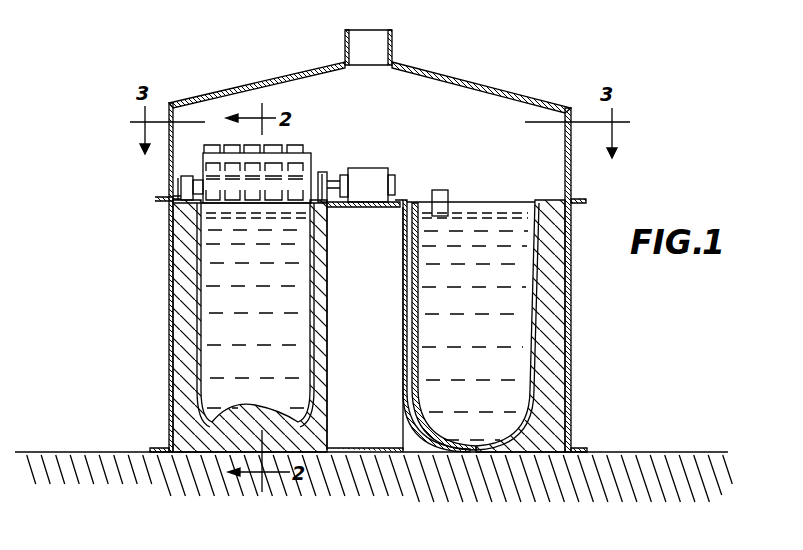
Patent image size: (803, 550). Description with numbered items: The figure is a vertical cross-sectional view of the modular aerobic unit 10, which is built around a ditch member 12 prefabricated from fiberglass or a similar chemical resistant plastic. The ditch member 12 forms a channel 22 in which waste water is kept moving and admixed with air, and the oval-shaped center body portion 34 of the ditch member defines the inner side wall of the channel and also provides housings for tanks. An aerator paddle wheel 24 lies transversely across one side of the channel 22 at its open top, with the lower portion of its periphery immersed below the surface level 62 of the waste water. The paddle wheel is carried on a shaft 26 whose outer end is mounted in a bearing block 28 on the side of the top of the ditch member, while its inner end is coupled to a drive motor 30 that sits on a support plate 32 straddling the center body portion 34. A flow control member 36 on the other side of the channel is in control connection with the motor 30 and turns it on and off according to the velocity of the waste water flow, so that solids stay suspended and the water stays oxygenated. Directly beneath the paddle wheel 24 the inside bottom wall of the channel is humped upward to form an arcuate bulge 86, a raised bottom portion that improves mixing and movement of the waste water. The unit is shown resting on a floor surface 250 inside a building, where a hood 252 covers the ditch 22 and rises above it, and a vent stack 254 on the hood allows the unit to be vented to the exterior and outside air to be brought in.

The aerobic unit 10 is at (578, 242).
The ditch member 12 is at (572, 348).
The channel 22 is at (522, 310).
The aerator paddle wheel 24 is at (297, 158).
The shaft 26 is at (183, 192).
The bearing block 28 is at (176, 184).
The drive motor 30 is at (370, 178).
The support plate 32 is at (368, 207).
The center body portion 34 is at (383, 432).
The flow control member 36 is at (441, 190).
The surface level 62 is at (510, 205).
The arcuate bulge 86 is at (240, 410).
The floor surface 250 is at (92, 452).
The hood 252 is at (503, 92).
The vent stack 254 is at (392, 41).